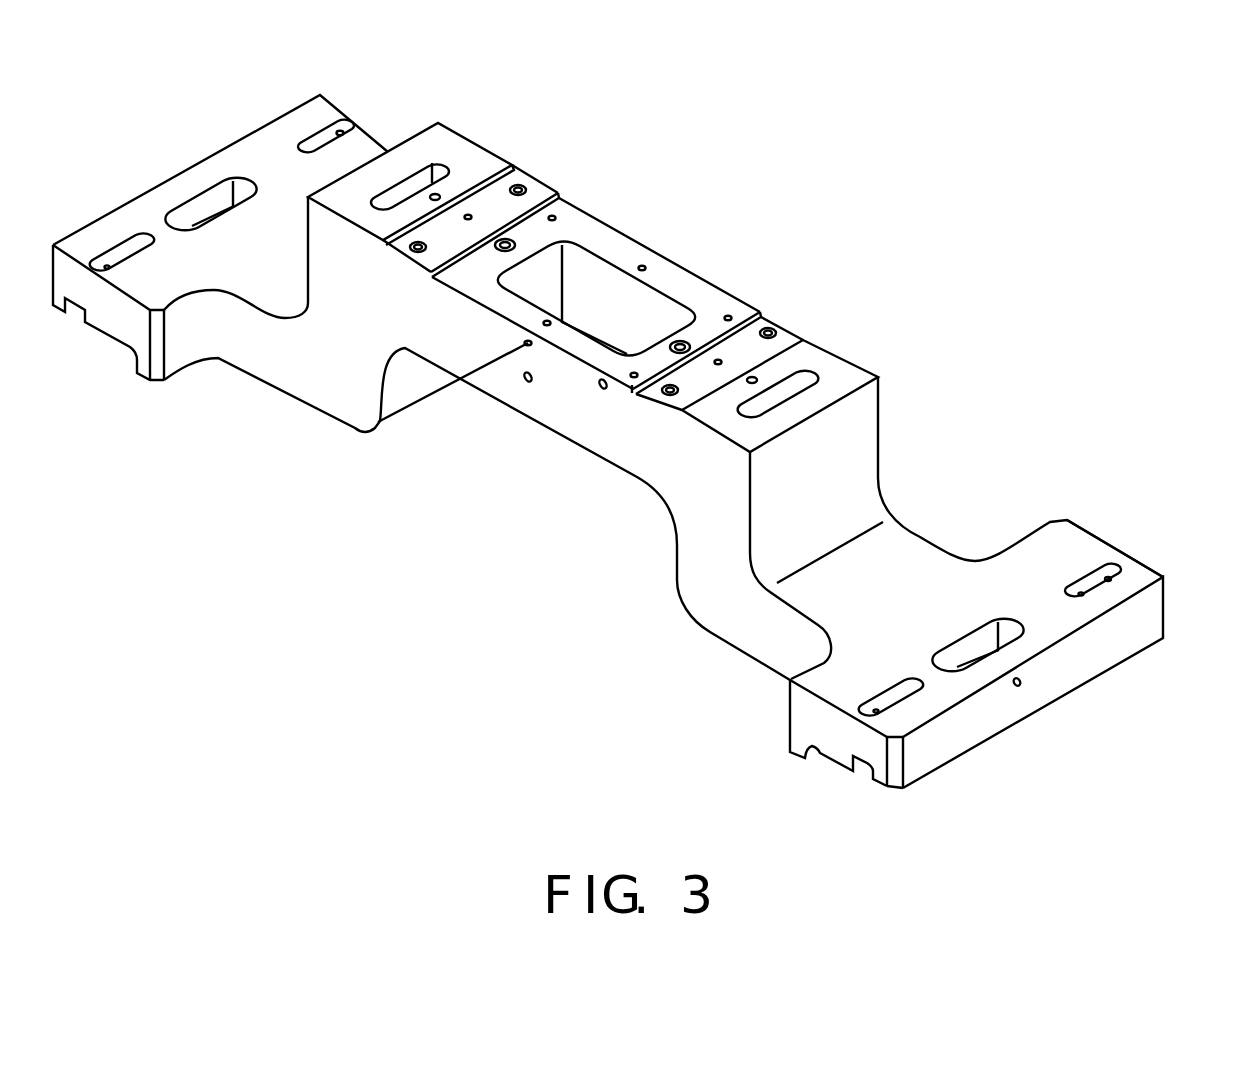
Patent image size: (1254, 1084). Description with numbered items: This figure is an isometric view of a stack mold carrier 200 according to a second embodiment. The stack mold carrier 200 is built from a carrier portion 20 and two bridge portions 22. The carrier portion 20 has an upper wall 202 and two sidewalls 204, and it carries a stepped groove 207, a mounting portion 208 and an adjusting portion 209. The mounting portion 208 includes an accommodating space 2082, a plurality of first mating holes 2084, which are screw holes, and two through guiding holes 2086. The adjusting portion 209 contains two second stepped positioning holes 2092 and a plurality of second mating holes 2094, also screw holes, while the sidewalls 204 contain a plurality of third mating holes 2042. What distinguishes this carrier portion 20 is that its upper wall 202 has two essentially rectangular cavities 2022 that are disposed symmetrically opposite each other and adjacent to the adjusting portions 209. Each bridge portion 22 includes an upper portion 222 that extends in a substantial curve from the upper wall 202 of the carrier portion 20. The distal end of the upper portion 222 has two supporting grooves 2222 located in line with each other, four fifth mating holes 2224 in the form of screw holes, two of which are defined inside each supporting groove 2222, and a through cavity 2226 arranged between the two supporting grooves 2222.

The stack mold carrier 200 is at (708, 49).
The carrier portion 20 is at (808, 319).
The upper wall 202 is at (450, 147).
The rectangular cavities 2022 is at (397, 190).
The sidewalls 204 is at (540, 410).
The third mating holes 2042 is at (526, 348).
The stepped groove 207 is at (743, 193).
The mounting portion 208 is at (578, 232).
The accommodating space 2082 is at (603, 287).
The first mating holes 2084 is at (632, 376).
The through guiding holes 2086 is at (684, 344).
The adjusting portion 209 is at (543, 187).
The second stepped positioning holes 2092 is at (416, 250).
The second mating holes 2094 is at (470, 214).
The bridge portions 22 is at (826, 783).
The upper portion 222 is at (1047, 552).
The supporting grooves 2222 is at (1112, 566).
The fifth mating holes 2224 is at (1112, 578).
The through cavity 2226 is at (983, 645).